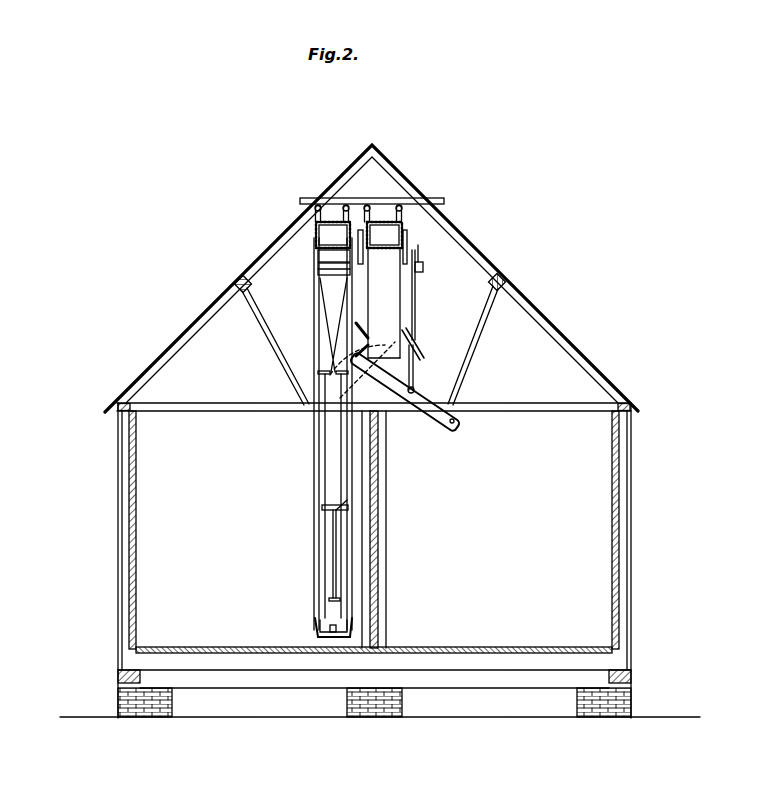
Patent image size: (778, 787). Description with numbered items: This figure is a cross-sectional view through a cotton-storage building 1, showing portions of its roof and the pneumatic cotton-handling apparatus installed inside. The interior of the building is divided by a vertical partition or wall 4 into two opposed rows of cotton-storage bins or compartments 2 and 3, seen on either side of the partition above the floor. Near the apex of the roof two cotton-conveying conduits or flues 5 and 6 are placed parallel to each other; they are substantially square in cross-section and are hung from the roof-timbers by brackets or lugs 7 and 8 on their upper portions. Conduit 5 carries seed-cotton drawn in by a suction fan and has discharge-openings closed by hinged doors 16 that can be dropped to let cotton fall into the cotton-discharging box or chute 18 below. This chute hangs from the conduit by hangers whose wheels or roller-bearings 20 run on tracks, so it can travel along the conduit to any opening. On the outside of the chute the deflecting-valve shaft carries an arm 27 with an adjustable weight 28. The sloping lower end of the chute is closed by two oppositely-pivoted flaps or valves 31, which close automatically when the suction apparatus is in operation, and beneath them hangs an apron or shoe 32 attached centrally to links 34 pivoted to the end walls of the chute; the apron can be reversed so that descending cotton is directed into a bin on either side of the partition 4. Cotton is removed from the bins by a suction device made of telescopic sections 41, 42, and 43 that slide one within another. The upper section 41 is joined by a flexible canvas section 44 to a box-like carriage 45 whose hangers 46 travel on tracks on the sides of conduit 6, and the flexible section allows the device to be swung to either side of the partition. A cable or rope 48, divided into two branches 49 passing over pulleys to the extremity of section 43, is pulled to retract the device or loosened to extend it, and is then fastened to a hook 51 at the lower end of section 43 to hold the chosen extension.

The cotton-storage building 1 is at (656, 416).
The cotton-storage bin 2 is at (243, 525).
The cotton-storage bin 3 is at (461, 524).
The vertical partition 4 is at (380, 514).
The cotton-conveying conduit 5 is at (384, 235).
The cotton-conveying conduit 6 is at (333, 235).
The bracket 7 is at (401, 207).
The bracket 8 is at (346, 207).
The door 16 is at (365, 323).
The cotton-discharging box 18 is at (413, 302).
The wheel 20 is at (406, 237).
The arm 27 is at (419, 252).
The adjustable weight 28 is at (424, 268).
The flap 31 is at (418, 348).
The apron 32 is at (440, 413).
The link 34 is at (416, 378).
The telescopic section 41 is at (333, 326).
The telescopic section 42 is at (320, 448).
The telescopic section 43 is at (330, 566).
The flexible section 44 is at (330, 266).
The box-like carriage 45 is at (333, 250).
The hanger 46 is at (316, 237).
The cable 48 is at (330, 482).
The cable branch 49 is at (345, 522).
The hook 51 is at (318, 628).